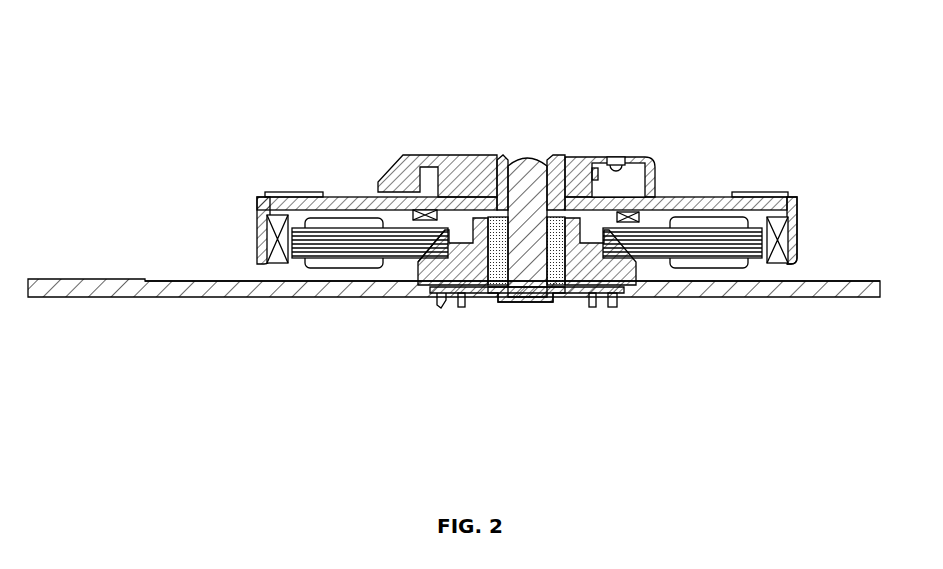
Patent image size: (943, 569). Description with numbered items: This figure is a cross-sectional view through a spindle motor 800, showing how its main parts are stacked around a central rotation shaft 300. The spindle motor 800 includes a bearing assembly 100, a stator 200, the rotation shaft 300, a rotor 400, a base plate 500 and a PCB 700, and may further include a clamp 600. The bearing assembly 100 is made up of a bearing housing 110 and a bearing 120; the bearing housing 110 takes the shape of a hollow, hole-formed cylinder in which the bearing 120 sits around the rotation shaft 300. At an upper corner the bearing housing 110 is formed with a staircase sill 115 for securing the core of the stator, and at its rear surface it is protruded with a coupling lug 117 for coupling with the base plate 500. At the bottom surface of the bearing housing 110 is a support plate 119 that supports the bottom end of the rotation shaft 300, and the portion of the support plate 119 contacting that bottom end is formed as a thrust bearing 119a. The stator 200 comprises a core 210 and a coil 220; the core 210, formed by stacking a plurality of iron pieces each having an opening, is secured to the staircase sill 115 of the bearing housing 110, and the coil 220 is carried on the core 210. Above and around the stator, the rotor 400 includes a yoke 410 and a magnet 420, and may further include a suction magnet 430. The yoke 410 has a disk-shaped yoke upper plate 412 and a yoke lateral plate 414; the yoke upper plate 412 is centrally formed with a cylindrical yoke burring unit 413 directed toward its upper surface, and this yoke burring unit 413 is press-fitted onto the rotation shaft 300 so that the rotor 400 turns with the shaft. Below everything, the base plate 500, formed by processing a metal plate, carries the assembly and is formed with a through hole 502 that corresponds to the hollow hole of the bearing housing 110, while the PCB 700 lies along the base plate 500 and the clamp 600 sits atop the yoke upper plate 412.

The bearing assembly 100 is at (458, 293).
The bearing housing 110 is at (468, 300).
The staircase sill 115 is at (432, 250).
The coupling lug 117 is at (606, 305).
The support plate 119 is at (550, 302).
The thrust bearing 119a is at (535, 305).
The bearing 120 is at (558, 225).
The stator 200 is at (661, 355).
The core 210 is at (657, 247).
The coil 220 is at (723, 265).
The rotation shaft 300 is at (528, 165).
The rotor 400 is at (712, 197).
The yoke 410 is at (856, 192).
The yoke upper plate 412 is at (776, 194).
The yoke burring unit 413 is at (505, 157).
The yoke lateral plate 414 is at (797, 215).
The magnet 420 is at (788, 236).
The suction magnet 430 is at (645, 207).
The base plate 500 is at (790, 292).
The through hole 502 is at (434, 300).
The clamp 600 is at (463, 160).
The PCB 700 is at (865, 279).
The spindle motor 800 is at (628, 128).